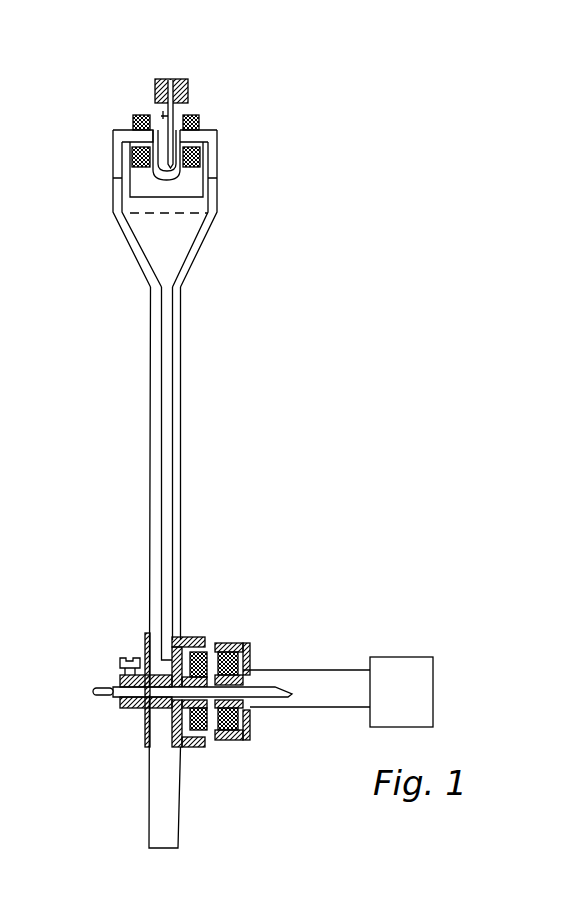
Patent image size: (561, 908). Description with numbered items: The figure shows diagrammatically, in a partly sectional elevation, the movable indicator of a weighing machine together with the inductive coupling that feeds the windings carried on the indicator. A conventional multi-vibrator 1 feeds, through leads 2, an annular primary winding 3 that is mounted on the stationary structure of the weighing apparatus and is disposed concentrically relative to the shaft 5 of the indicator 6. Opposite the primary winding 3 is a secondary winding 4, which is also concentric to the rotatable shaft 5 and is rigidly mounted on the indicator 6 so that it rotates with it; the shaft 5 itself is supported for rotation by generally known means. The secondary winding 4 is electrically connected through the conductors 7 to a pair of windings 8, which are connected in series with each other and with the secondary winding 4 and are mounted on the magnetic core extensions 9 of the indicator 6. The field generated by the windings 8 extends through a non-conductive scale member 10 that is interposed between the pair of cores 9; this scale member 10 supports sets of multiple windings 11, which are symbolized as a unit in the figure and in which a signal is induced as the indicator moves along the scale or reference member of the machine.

The multi-vibrator 1 is at (398, 660).
The leads 2 is at (368, 705).
The annular primary winding 3 is at (232, 647).
The secondary winding 4 is at (200, 750).
The shaft 5 is at (268, 690).
The indicator 6 is at (180, 450).
The conductors 7 is at (142, 252).
The pair of windings 8 is at (135, 125).
The magnetic core extensions 9 is at (130, 137).
The non-conductive scale member 10 is at (173, 112).
The sets of multiple windings 11 is at (158, 128).